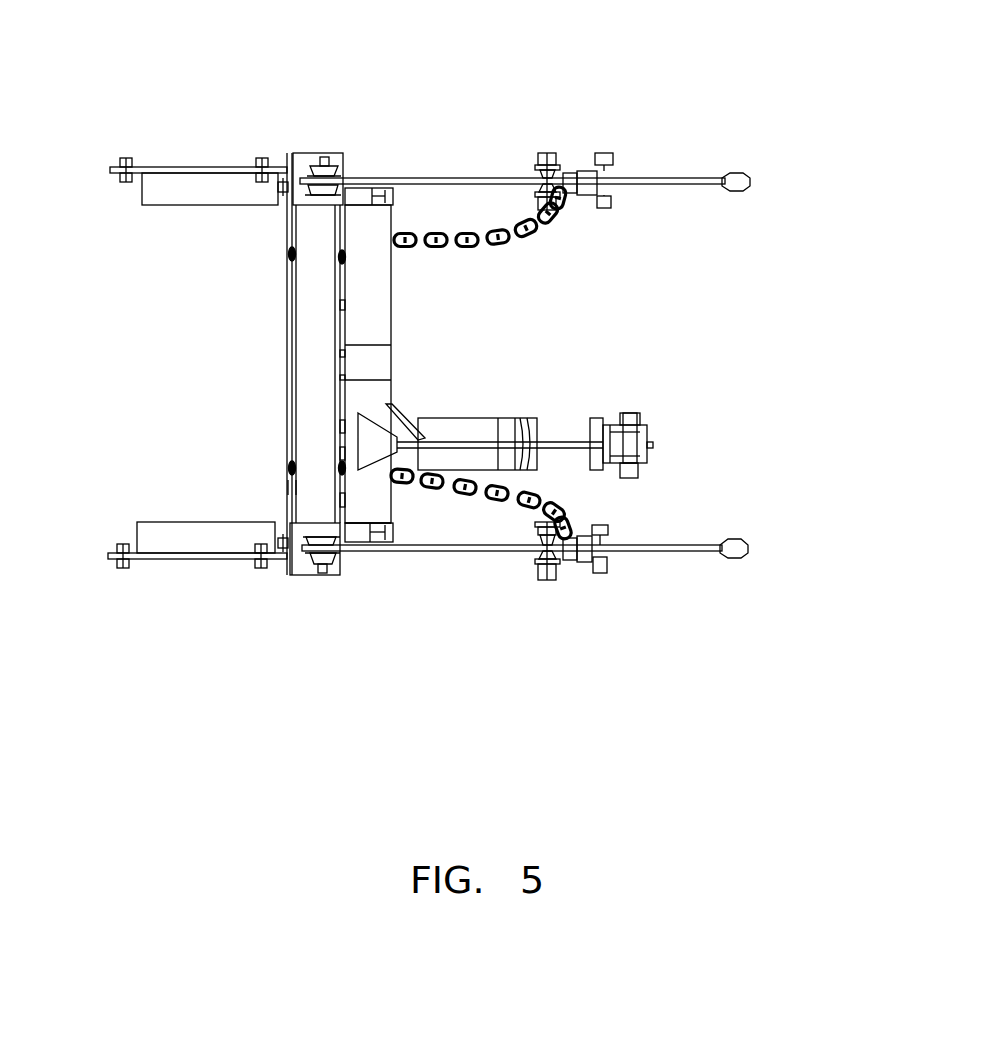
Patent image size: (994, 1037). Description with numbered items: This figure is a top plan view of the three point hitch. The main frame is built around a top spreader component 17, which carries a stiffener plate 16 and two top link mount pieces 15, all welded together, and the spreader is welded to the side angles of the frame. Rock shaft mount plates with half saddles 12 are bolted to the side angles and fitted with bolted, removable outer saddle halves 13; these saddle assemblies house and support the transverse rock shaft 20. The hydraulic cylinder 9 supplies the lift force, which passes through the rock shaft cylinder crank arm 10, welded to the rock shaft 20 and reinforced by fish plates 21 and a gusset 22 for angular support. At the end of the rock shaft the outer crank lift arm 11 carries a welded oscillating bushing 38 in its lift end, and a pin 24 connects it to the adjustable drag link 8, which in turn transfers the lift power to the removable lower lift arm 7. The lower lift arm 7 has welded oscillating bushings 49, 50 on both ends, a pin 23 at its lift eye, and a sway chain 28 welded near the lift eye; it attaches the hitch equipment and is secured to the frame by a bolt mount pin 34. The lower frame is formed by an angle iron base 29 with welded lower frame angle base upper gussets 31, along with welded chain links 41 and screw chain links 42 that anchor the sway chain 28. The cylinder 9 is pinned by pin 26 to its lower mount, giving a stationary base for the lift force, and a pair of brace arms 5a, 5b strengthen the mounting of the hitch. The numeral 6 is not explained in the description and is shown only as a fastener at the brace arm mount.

The brace arm 5a is at (157, 578).
The brace arm 5b is at (191, 157).
The mounting bolt 6 is at (266, 137).
The lower lift arm 7 is at (537, 407).
The drag link 8 is at (624, 581).
The cylinder 9 is at (708, 421).
The rock shaft cylinder crank arm 10 is at (621, 439).
The rock shaft outer crank lift arm 11 is at (560, 608).
The rock shaft mount plate with half saddle 12 is at (424, 607).
The outer saddle half 13 is at (424, 412).
The top link mount piece 15 is at (214, 363).
The stiffener plate 16 is at (191, 364).
The top spreader component 17 is at (186, 364).
The transverse rock shaft 20 is at (595, 364).
The fish plate 21 is at (601, 377).
The gusset 22 is at (628, 397).
The pin 23 is at (653, 139).
The pin 24 is at (600, 110).
The pin 26 is at (732, 497).
The sway chain 28 is at (453, 305).
The angle iron base 29 is at (166, 364).
The lower frame angle base upper gusset 31 is at (164, 217).
The bolt mount pin 34 is at (278, 621).
The oscillating bushing 38 is at (507, 102).
The welded chain link 41 is at (166, 510).
The screw chain link 42 is at (191, 366).
The oscillating bushing 49 is at (273, 579).
The oscillating bushing 50 is at (780, 386).